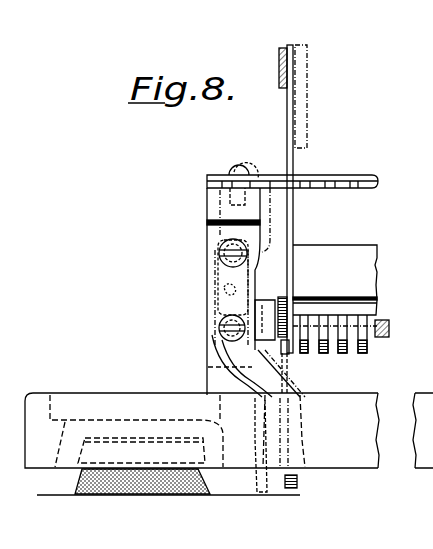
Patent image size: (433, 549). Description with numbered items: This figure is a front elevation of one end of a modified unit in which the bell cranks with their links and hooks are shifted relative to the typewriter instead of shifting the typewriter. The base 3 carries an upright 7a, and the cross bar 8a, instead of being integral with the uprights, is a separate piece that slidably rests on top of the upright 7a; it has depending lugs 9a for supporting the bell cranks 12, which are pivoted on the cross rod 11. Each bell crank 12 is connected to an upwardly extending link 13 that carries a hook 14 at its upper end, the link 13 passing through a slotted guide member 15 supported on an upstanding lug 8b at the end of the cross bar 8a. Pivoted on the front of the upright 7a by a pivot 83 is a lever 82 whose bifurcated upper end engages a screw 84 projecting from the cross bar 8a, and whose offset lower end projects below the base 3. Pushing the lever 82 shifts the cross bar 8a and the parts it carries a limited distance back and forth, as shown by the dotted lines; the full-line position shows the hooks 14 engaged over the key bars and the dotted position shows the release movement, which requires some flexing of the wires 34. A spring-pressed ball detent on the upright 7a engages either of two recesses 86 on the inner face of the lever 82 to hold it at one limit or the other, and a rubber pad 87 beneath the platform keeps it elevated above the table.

The base 3 is at (100, 393).
The upright 7a is at (207, 357).
The cross bar 8a is at (351, 253).
The upstanding lug 8b is at (207, 222).
The depending lugs 9a is at (333, 354).
The cross rod 11 is at (418, 335).
The bell crank 12 is at (286, 355).
The link 13 is at (287, 125).
The hook 14 is at (286, 48).
The guide member 15 is at (378, 182).
The wires 34 is at (310, 437).
The lever 82 is at (292, 387).
The pivot 83 is at (219, 329).
The screw 84 is at (219, 255).
The recesses 86 is at (224, 291).
The rubber pad 87 is at (153, 490).